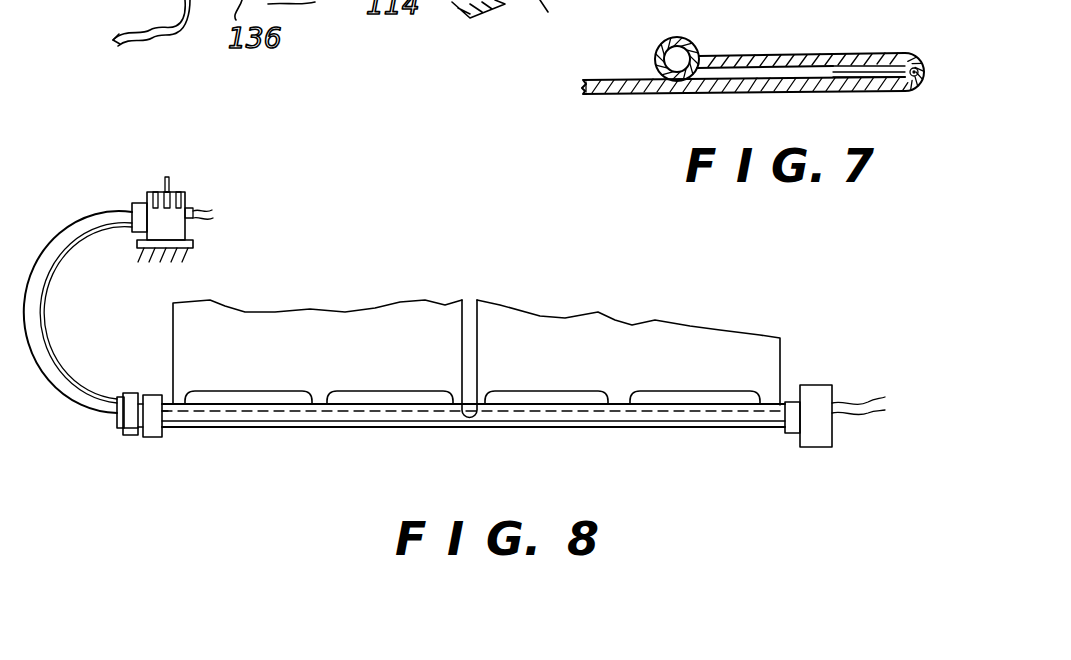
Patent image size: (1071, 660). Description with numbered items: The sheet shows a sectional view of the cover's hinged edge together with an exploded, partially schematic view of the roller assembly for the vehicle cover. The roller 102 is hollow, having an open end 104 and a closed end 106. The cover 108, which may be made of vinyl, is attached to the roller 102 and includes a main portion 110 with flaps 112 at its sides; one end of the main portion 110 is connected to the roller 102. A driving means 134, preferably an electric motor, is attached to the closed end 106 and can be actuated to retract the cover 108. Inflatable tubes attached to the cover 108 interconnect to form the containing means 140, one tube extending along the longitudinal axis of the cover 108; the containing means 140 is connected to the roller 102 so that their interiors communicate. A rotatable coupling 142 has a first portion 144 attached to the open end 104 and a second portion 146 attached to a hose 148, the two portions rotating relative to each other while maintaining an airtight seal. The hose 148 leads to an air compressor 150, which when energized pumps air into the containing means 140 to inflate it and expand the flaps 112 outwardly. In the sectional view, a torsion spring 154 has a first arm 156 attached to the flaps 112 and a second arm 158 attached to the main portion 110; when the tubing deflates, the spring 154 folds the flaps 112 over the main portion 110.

In FIG. 8, the roller 102 is at (292, 419).
In FIG. 8, the open end 104 is at (165, 425).
In FIG. 8, the closed end 106 is at (786, 430).
In FIG. 7, the cover 108 is at (694, 105).
In FIG. 8, the cover 108 is at (572, 303).
In FIG. 7, the main portion 110 is at (731, 93).
In FIG. 8, the main portion 110 is at (342, 303).
In FIG. 7, the flaps 112 is at (800, 55).
In FIG. 8, the driving means 134 is at (820, 445).
In FIG. 7, the containing means 140 is at (680, 58).
In FIG. 8, the containing means 140 is at (478, 362).
In FIG. 8, the rotatable coupling 142 is at (130, 465).
In FIG. 8, the first portion 144 is at (150, 394).
In FIG. 8, the second portion 146 is at (120, 432).
In FIG. 8, the hose 148 is at (59, 348).
In FIG. 8, the air compressor 150 is at (172, 196).
In FIG. 7, the torsion springs 154 is at (905, 67).
In FIG. 7, the first arm 156 is at (860, 67).
In FIG. 7, the second arm 158 is at (865, 80).